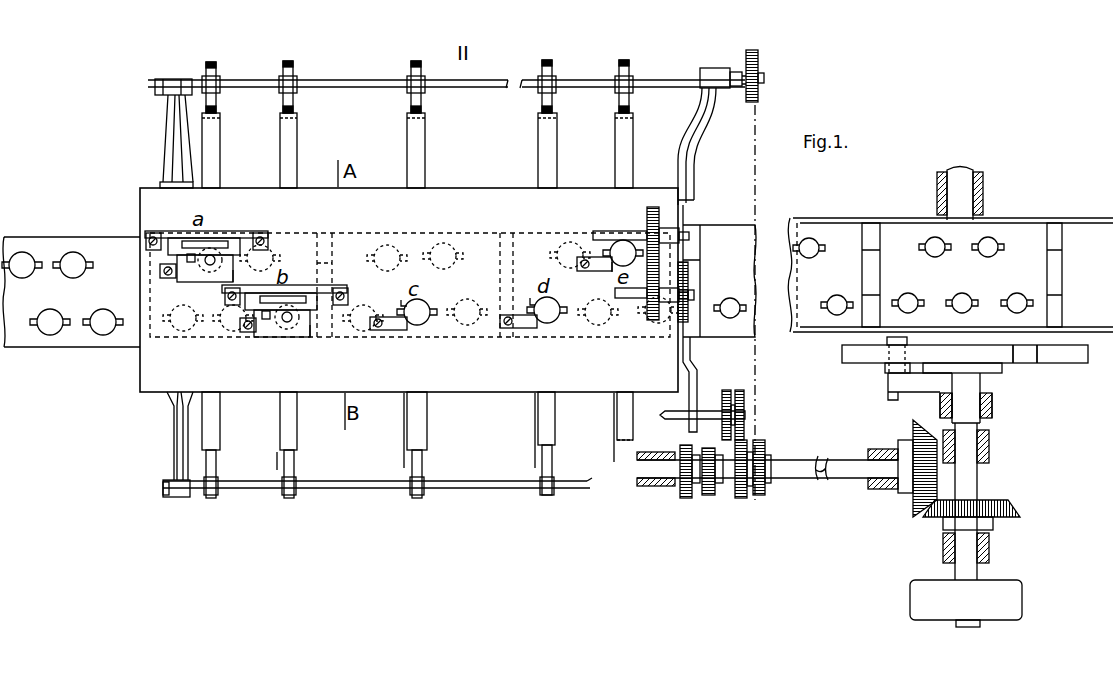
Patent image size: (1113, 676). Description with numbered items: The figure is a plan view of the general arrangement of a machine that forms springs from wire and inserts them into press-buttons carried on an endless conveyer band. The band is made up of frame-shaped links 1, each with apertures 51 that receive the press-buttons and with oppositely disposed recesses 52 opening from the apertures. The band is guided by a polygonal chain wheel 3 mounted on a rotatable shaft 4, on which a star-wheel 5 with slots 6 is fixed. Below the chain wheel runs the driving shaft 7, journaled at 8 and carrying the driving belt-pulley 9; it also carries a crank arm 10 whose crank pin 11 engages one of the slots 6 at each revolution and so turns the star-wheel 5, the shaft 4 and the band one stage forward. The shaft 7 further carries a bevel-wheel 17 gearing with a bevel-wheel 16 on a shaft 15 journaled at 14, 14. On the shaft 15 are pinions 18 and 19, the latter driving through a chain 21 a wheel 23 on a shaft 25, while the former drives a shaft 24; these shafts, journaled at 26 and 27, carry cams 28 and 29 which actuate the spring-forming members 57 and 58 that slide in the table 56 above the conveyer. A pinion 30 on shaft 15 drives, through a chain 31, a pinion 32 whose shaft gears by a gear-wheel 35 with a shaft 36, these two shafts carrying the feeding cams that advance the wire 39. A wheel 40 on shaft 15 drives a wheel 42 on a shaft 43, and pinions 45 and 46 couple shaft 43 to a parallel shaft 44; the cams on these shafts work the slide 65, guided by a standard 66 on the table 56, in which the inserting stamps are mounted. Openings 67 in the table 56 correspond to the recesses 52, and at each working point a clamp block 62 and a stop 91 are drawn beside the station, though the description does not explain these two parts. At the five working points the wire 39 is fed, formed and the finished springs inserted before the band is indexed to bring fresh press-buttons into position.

The frame or link 1 is at (112, 345).
The chain wheel 3 is at (1073, 222).
The rotatable shaft 4 is at (972, 208).
The star-wheel 5 is at (1046, 363).
The slot 6 is at (1024, 365).
The driving shaft 7 is at (975, 484).
The journal 8 is at (987, 452).
The driving belt-pulley 9 is at (1015, 598).
The crank arm 10 is at (915, 395).
The crank pin 11 is at (886, 375).
The journal 14 is at (663, 488).
The shaft 15 is at (826, 480).
The bevel-wheel 16 is at (920, 492).
The bevel-wheel 17 is at (938, 518).
The pinion 18 is at (708, 497).
The pinion 19 is at (763, 497).
The chain 21 is at (756, 176).
The wheel 23 is at (760, 70).
The shaft 24 is at (377, 489).
The shaft 25 is at (485, 82).
The journal 26 is at (183, 497).
The journal 27 is at (710, 68).
The cam 28 is at (210, 470).
The cam 29 is at (282, 102).
The pinion 30 is at (742, 498).
The chain 31 is at (742, 442).
The pinion 32 is at (739, 392).
The gear-wheel 35 is at (724, 398).
The shaft 36 is at (708, 418).
The wire 39 is at (277, 462).
The wheel 40 is at (686, 498).
The wheel 42 is at (689, 288).
The shaft 43 is at (628, 298).
The shaft 44 is at (603, 233).
The pinion 45 is at (656, 322).
The pinion 46 is at (650, 212).
The aperture 51 is at (50, 310).
The recess 52 is at (68, 318).
The table 56 is at (468, 189).
The member 57 is at (213, 431).
The member 58 is at (286, 149).
The clamp block 62 is at (168, 278).
The slide 65 is at (233, 274).
The standard 66 is at (228, 233).
The opening 67 is at (210, 272).
The stop 91 is at (403, 312).